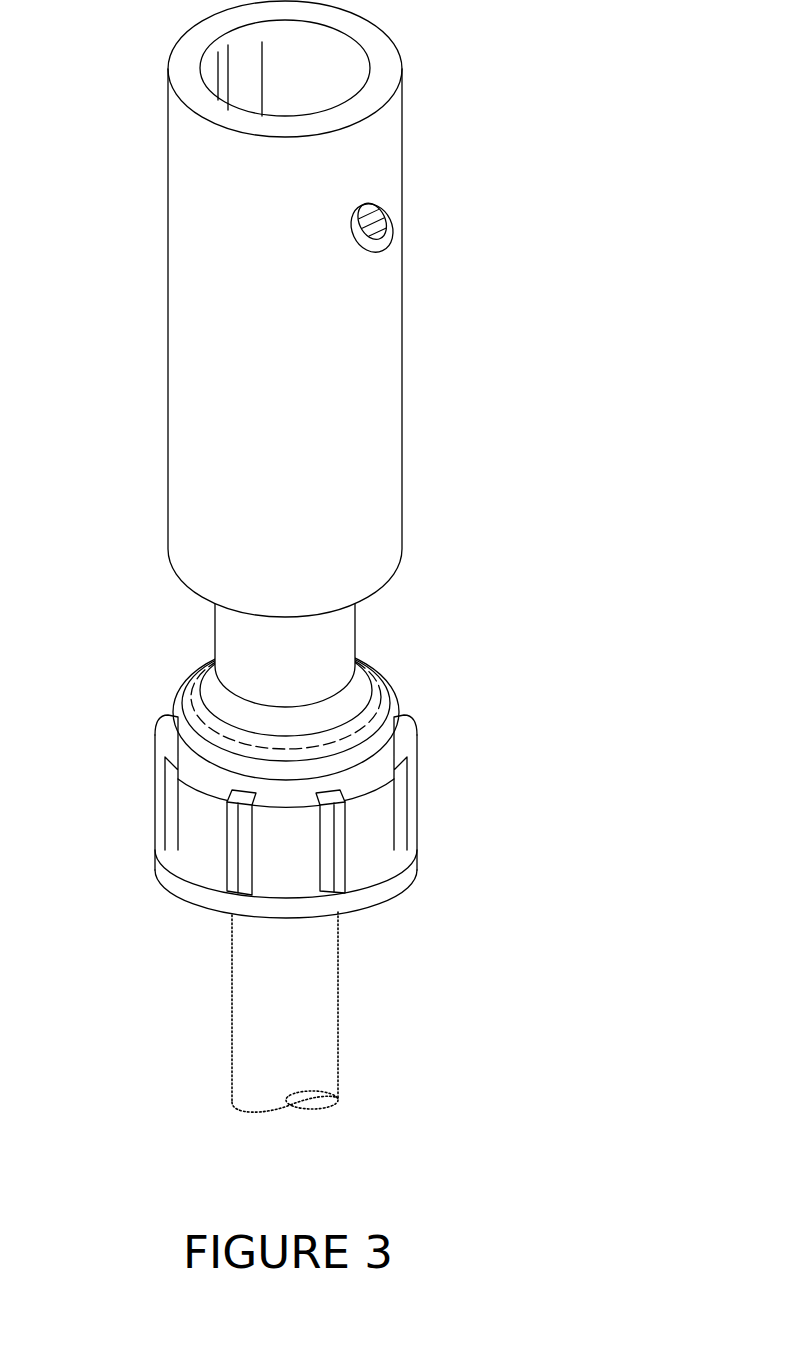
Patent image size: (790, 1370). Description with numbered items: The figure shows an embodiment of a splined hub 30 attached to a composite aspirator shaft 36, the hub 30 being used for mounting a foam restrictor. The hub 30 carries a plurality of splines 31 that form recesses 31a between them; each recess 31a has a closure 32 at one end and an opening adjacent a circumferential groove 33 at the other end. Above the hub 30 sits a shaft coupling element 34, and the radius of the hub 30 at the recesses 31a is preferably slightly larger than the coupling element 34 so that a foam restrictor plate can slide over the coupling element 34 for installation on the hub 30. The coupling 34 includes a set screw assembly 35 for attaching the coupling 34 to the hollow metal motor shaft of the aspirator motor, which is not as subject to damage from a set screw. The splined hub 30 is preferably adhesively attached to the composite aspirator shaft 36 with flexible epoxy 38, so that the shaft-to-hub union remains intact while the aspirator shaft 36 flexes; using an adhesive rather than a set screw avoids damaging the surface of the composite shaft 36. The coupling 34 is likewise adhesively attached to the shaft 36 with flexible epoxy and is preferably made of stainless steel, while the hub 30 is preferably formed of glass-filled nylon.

The splined hub 30 is at (466, 745).
The splines 31 is at (237, 864).
The recesses 31a is at (253, 860).
The closure 32 is at (234, 895).
The circumferential groove 33 is at (360, 772).
The shaft coupling element 34 is at (346, 354).
The set screw assembly 35 is at (392, 233).
The composite aspirator shaft 36 is at (330, 1073).
The flexible epoxy 38 is at (376, 657).